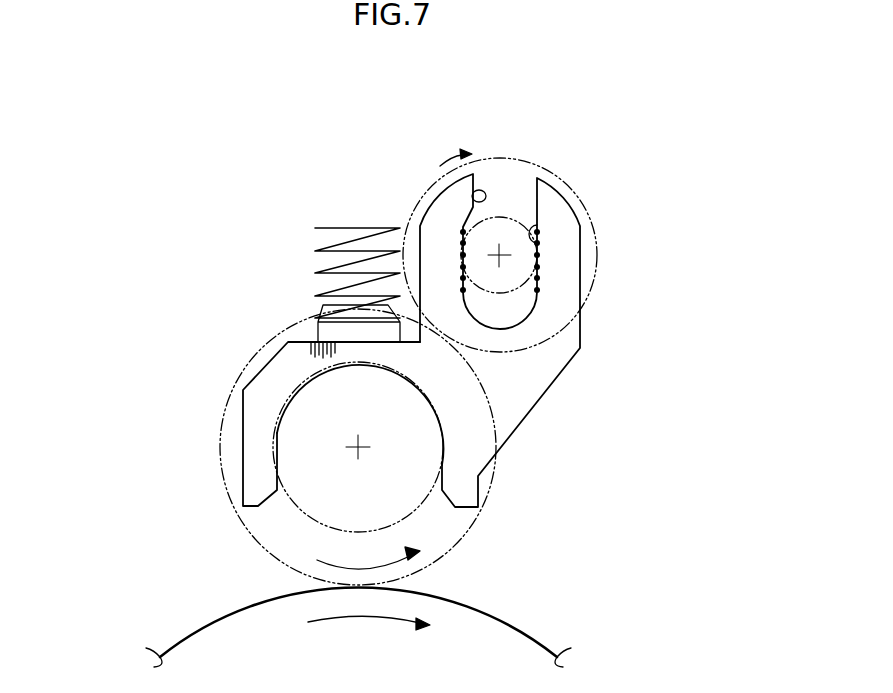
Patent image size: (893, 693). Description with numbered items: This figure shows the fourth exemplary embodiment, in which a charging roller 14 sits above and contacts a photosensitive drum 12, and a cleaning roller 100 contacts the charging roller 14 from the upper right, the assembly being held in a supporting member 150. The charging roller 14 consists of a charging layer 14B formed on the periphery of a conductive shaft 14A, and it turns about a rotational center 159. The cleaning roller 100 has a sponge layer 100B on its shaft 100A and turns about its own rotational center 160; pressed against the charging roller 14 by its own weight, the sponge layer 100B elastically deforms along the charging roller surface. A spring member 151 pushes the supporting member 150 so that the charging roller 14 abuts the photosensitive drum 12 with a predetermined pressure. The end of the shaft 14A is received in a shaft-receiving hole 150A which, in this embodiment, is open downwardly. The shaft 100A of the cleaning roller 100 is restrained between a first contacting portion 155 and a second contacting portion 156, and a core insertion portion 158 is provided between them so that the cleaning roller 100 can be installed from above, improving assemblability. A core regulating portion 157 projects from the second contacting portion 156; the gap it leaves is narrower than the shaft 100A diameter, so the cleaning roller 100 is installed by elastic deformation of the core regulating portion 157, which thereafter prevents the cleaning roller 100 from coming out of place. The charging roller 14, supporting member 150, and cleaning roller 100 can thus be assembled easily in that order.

The photosensitive drum 12 is at (527, 638).
The charging roller 14 is at (263, 447).
The shaft 14A is at (275, 465).
The charging layer 14B is at (220, 440).
The cleaning roller 100 is at (589, 282).
The shaft 100A is at (507, 282).
The sponge layer 100B is at (522, 340).
The supporting member 150 is at (523, 410).
The shaft-receiving hole 150A is at (290, 420).
The spring member 151 is at (315, 238).
The first contacting portion 155 is at (538, 228).
The second contacting portion 156 is at (460, 238).
The core regulating portion 157 is at (467, 195).
The core insertion portion 158 is at (508, 168).
The rotational center 159 is at (360, 448).
The rotational center 160 is at (500, 258).